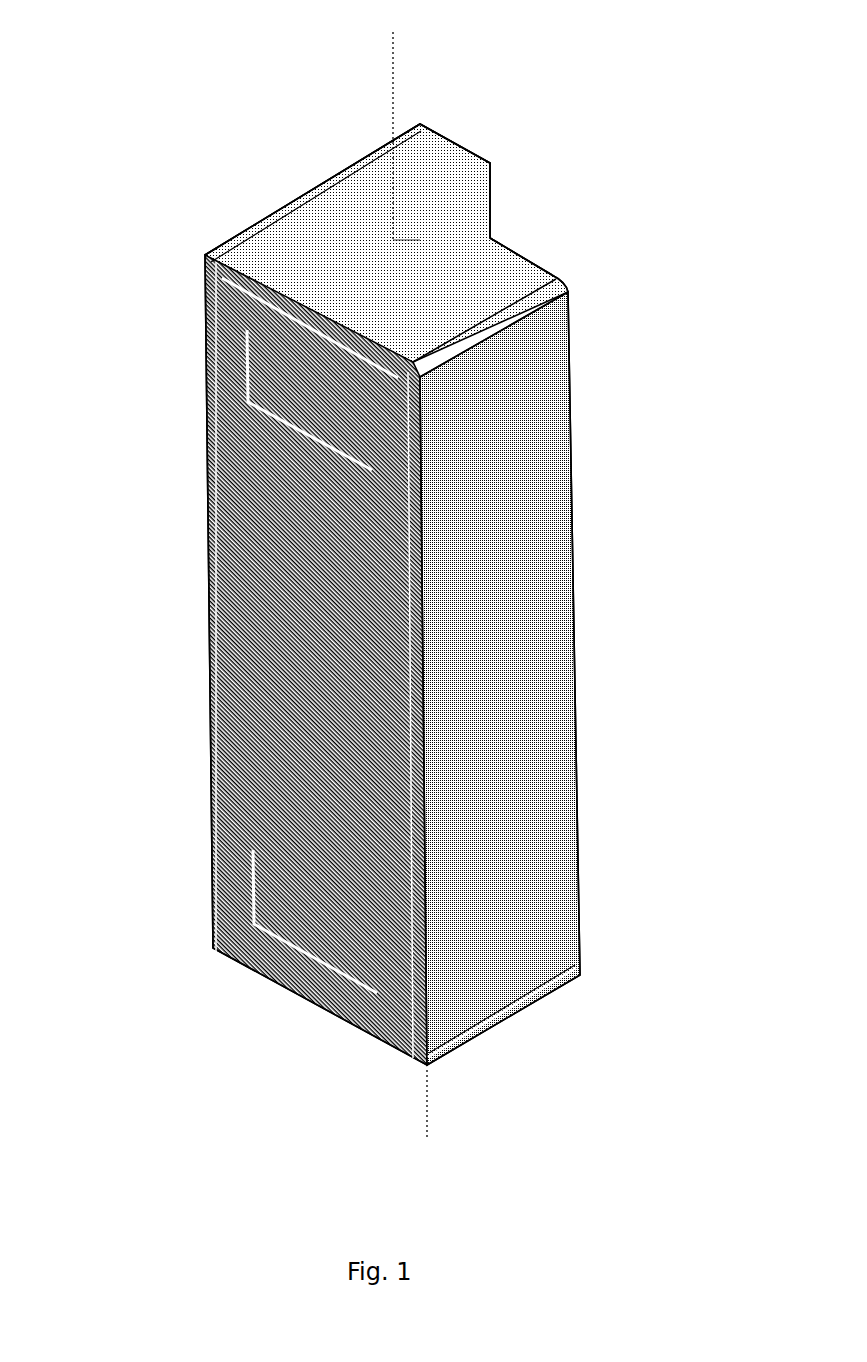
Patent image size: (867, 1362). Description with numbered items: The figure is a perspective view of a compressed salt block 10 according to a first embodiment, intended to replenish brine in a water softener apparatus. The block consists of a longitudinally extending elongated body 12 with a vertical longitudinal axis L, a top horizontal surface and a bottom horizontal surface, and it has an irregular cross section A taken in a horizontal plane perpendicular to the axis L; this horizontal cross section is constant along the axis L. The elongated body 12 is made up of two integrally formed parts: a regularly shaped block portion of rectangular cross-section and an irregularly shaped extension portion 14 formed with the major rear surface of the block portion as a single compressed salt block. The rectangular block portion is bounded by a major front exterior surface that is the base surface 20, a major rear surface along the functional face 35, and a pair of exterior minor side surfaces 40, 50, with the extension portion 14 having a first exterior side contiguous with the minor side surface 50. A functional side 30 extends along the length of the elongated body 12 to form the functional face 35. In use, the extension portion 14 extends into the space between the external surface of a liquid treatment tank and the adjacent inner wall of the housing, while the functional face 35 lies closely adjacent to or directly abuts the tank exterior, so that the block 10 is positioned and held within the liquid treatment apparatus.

The compressed salt block 10 is at (478, 114).
The elongated body 12 is at (503, 648).
The extension portion 14 is at (430, 158).
The base surface 20 is at (205, 467).
The functional side 30 is at (492, 162).
The functional face 35 is at (534, 258).
The exterior minor side surface 40 is at (492, 328).
The exterior minor side surface 50 is at (307, 192).
The irregular cross section A is at (393, 240).
The vertical longitudinal axis L is at (408, 588).